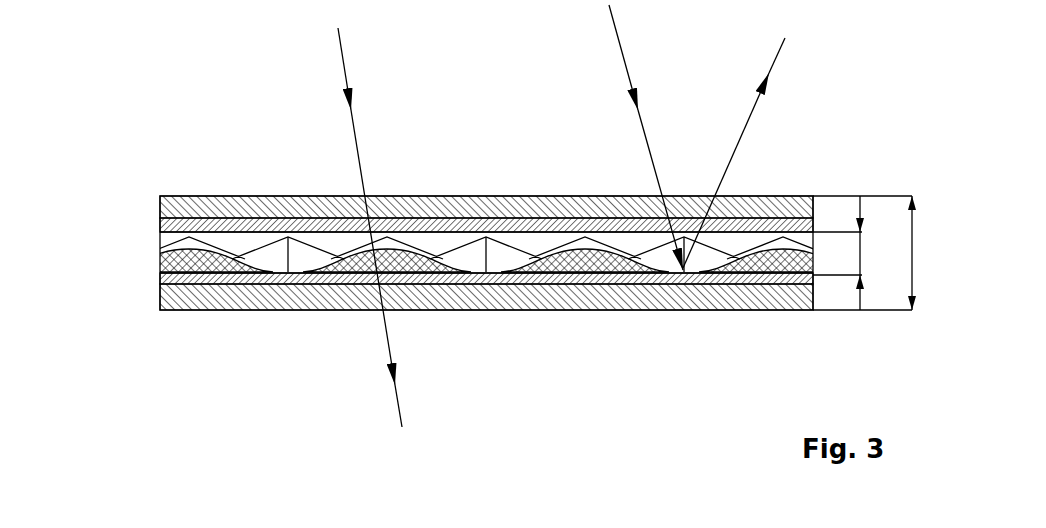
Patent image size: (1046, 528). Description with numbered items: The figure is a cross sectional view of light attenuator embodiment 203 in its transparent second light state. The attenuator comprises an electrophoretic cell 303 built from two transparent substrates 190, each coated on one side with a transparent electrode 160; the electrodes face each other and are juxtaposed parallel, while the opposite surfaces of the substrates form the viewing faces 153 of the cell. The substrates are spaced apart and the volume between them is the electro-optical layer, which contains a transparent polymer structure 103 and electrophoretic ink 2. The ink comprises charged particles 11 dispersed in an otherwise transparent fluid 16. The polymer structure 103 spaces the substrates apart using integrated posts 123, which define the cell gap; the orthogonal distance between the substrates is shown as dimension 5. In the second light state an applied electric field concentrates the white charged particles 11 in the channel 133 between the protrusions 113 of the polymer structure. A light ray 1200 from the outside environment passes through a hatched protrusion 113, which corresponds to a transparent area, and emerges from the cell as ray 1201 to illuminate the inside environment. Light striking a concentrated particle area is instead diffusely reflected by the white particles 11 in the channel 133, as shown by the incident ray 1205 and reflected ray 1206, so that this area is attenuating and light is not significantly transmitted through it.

The viewing face 153 is at (193, 196).
The transparent substrate 190 is at (160, 205).
The transparent electrode 160 is at (160, 225).
The polymer structure 103 is at (160, 254).
The electrophoretic ink 2 is at (542, 244).
The integrated post 123 is at (288, 233).
The protrusion 113 is at (788, 224).
The transparent fluid 16 is at (340, 245).
The charged particles 11 is at (478, 256).
The channel 133 is at (487, 272).
The light ray 1200 is at (370, 163).
The emerging ray 1201 is at (420, 368).
The incident ray 1205 is at (646, 137).
The reflected ray 1206 is at (758, 153).
The spacing dimension 5 is at (837, 253).
The electrophoretic cell 303 is at (885, 253).
The light attenuator embodiment 203 is at (562, 387).